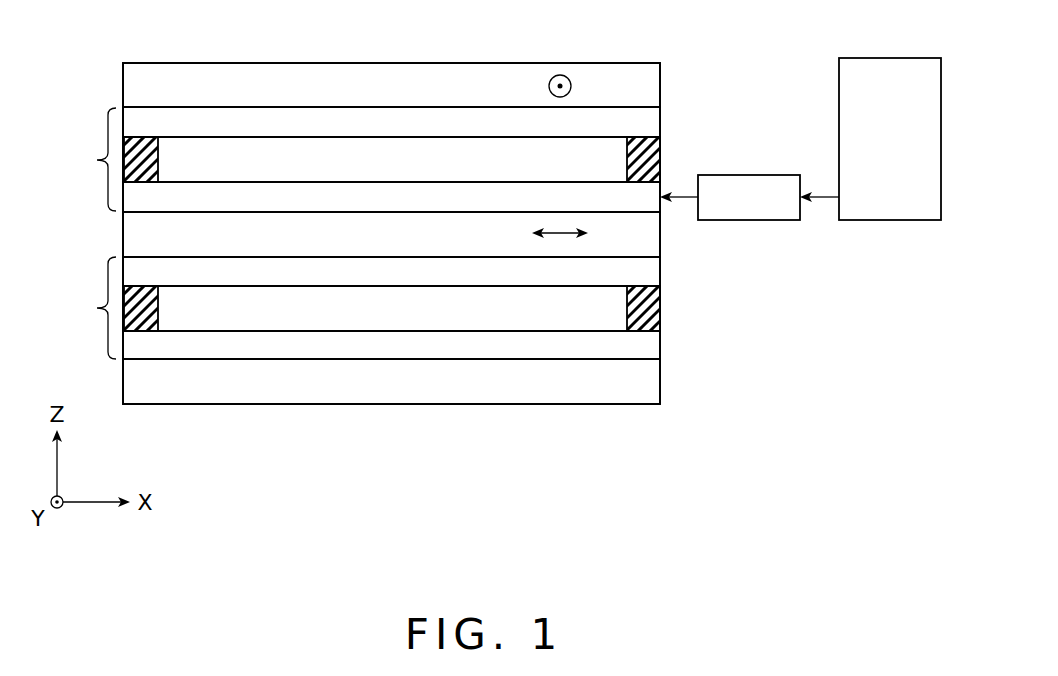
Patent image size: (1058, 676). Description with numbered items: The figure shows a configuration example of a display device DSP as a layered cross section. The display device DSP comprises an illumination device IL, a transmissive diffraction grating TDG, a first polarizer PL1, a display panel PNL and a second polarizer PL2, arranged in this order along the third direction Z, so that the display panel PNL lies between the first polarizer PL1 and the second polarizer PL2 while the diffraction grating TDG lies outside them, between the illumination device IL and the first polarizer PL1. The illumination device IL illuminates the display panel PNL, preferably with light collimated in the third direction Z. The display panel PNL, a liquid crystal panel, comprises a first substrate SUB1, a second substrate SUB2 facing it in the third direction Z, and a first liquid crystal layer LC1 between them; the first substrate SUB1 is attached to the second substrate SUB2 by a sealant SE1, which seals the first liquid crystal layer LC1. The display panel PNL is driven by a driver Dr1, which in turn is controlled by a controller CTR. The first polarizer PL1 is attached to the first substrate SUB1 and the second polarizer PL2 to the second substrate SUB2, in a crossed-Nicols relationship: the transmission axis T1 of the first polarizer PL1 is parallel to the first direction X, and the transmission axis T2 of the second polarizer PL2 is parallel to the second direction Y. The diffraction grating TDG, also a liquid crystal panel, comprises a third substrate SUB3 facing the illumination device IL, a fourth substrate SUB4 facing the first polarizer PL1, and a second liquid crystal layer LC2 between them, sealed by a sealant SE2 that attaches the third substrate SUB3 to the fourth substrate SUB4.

The display device DSP is at (537, 468).
The second polarizer PL2 is at (391, 85).
The second substrate SUB2 is at (391, 122).
The first liquid crystal layer LC1 is at (391, 159).
The first substrate SUB1 is at (391, 197).
The first polarizer PL1 is at (391, 234).
The fourth substrate SUB4 is at (391, 271).
The second liquid crystal layer LC2 is at (391, 308).
The third substrate SUB3 is at (391, 345).
The illumination device IL is at (391, 381).
The sealant SE1 is at (661, 147).
The sealant SE2 is at (661, 315).
The transmission axis T1 is at (558, 238).
The transmission axis T2 is at (560, 74).
The driver Dr1 is at (730, 197).
The controller CTR is at (870, 139).
The display panel PNL is at (81, 159).
The transmissive diffraction grating TDG is at (78, 308).